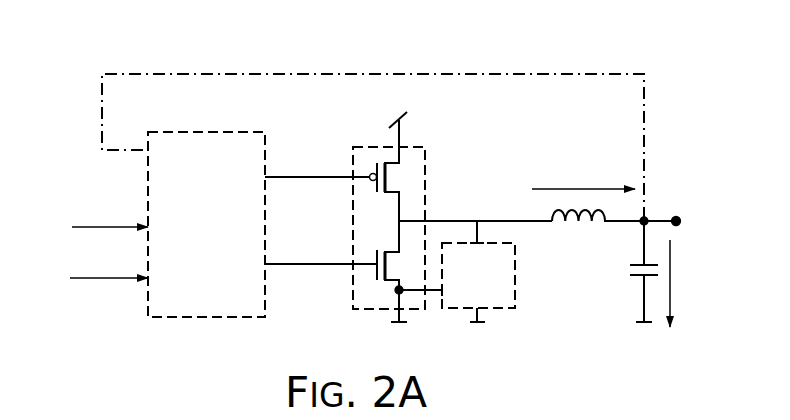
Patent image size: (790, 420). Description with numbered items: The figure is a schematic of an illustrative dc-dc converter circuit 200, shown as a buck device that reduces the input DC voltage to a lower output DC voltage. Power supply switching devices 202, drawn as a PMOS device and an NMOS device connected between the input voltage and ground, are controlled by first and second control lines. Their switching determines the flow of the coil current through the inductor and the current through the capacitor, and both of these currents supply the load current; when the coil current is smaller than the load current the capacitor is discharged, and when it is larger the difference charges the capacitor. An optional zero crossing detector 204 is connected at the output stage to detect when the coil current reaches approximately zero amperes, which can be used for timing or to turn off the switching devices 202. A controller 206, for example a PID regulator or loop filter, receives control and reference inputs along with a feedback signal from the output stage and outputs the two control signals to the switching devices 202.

The dc-dc converter circuit 200 is at (618, 33).
The power supply switching devices 202 is at (380, 312).
The zero crossing detector 204 is at (495, 285).
The controller 206 is at (225, 236).